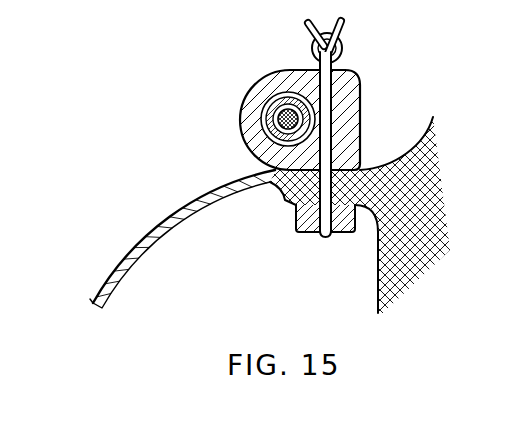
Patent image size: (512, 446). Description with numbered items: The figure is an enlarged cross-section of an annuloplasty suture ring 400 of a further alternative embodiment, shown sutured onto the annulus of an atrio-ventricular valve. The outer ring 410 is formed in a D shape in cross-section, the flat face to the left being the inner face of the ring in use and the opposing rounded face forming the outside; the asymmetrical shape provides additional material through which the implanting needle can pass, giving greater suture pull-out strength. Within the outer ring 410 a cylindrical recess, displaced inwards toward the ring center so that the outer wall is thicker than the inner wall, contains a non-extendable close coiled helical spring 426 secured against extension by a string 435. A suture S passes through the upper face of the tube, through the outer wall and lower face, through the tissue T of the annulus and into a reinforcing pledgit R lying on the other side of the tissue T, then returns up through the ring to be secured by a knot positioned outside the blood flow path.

The suture ring 400 is at (297, 120).
The outer ring 410 is at (290, 71).
The close coiled helical spring 426 is at (267, 137).
The string 435 is at (268, 152).
The suture S is at (338, 50).
The tissue T is at (282, 207).
The reinforcing pledgit R is at (300, 234).